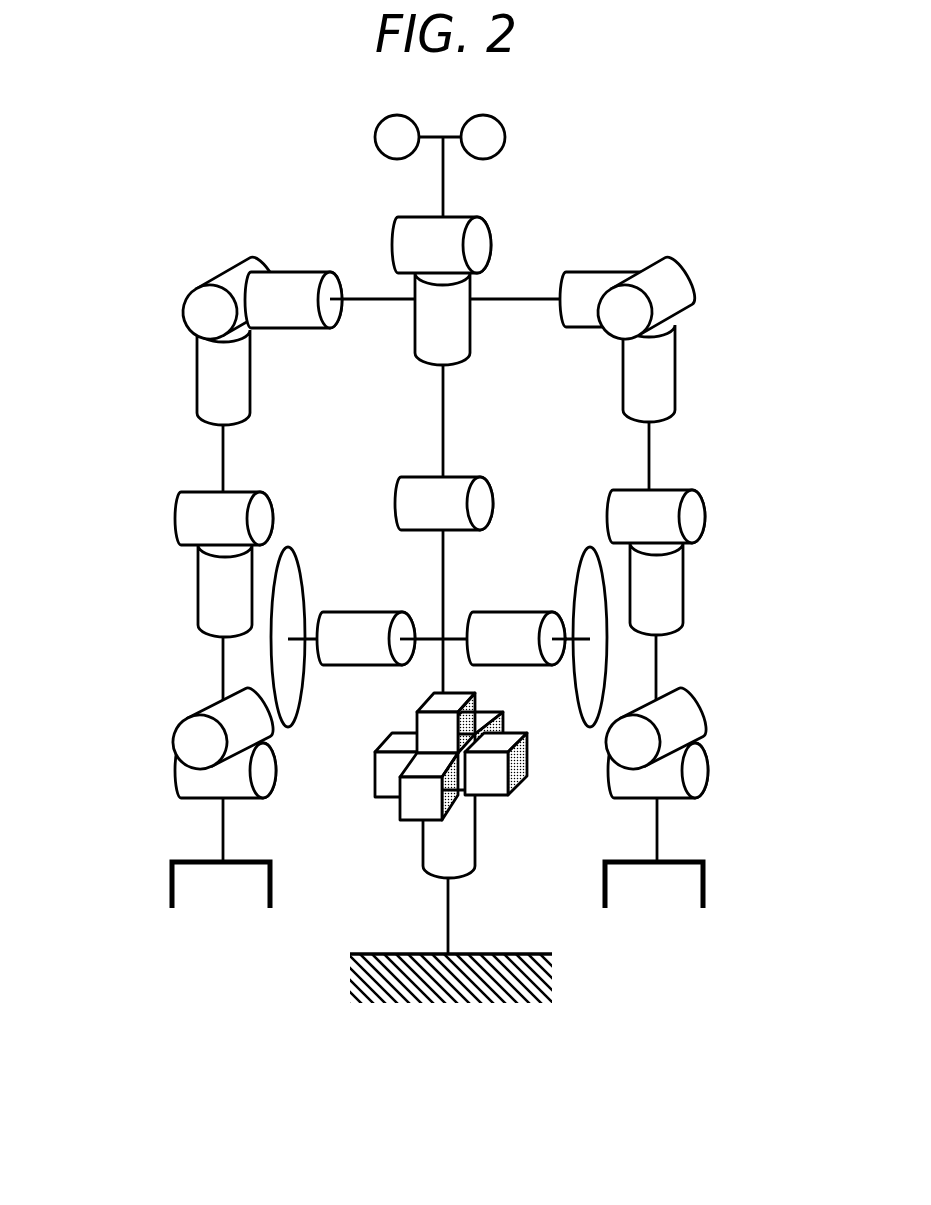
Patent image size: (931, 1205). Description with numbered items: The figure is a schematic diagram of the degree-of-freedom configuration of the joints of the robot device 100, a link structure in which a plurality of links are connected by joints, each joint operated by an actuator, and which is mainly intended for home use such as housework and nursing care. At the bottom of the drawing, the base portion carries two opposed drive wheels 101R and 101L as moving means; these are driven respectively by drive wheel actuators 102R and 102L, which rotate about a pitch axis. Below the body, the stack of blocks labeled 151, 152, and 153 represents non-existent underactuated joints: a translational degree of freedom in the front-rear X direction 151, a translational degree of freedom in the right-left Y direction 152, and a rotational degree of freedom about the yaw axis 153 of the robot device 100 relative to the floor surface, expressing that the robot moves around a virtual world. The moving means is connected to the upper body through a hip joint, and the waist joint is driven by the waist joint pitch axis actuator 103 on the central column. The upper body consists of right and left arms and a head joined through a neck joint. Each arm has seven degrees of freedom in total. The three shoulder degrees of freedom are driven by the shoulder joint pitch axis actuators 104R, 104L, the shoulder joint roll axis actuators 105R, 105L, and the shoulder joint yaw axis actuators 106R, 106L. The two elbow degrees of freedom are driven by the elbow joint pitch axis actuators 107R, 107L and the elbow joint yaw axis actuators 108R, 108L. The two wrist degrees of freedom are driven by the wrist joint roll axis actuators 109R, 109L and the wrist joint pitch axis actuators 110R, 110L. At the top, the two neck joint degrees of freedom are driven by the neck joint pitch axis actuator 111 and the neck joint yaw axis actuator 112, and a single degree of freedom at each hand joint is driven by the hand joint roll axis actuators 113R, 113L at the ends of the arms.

The robot device 100 is at (518, 1153).
The drive wheel 101R is at (290, 560).
The drive wheel 101L is at (582, 563).
The drive wheel actuator 102R is at (353, 617).
The drive wheel actuator 102L is at (507, 617).
The waist joint pitch axis actuator 103 is at (465, 482).
The shoulder joint pitch axis actuator 104R is at (287, 278).
The shoulder joint pitch axis actuator 104L is at (582, 272).
The shoulder joint roll axis actuator 105R is at (230, 278).
The shoulder joint roll axis actuator 105L is at (682, 277).
The shoulder joint yaw axis actuator 106R is at (197, 363).
The shoulder joint yaw axis actuator 106L is at (668, 368).
The elbow joint pitch axis actuator 107R is at (181, 515).
The elbow joint pitch axis actuator 107L is at (698, 512).
The elbow joint yaw axis actuator 108R is at (198, 582).
The elbow joint yaw axis actuator 108L is at (680, 588).
The wrist joint roll axis actuator 109R is at (181, 715).
The wrist joint roll axis actuator 109L is at (697, 717).
The wrist joint pitch axis actuator 110R is at (181, 775).
The wrist joint pitch axis actuator 110L is at (698, 765).
The neck joint pitch axis actuator 111 is at (470, 215).
The neck joint yaw axis actuator 112 is at (462, 332).
The hand joint roll axis actuator 113R is at (167, 879).
The hand joint roll axis actuator 113L is at (705, 885).
The underactuated joint 151 is at (412, 805).
The underactuated joint 152 is at (523, 768).
The underactuated joint 153 is at (468, 845).